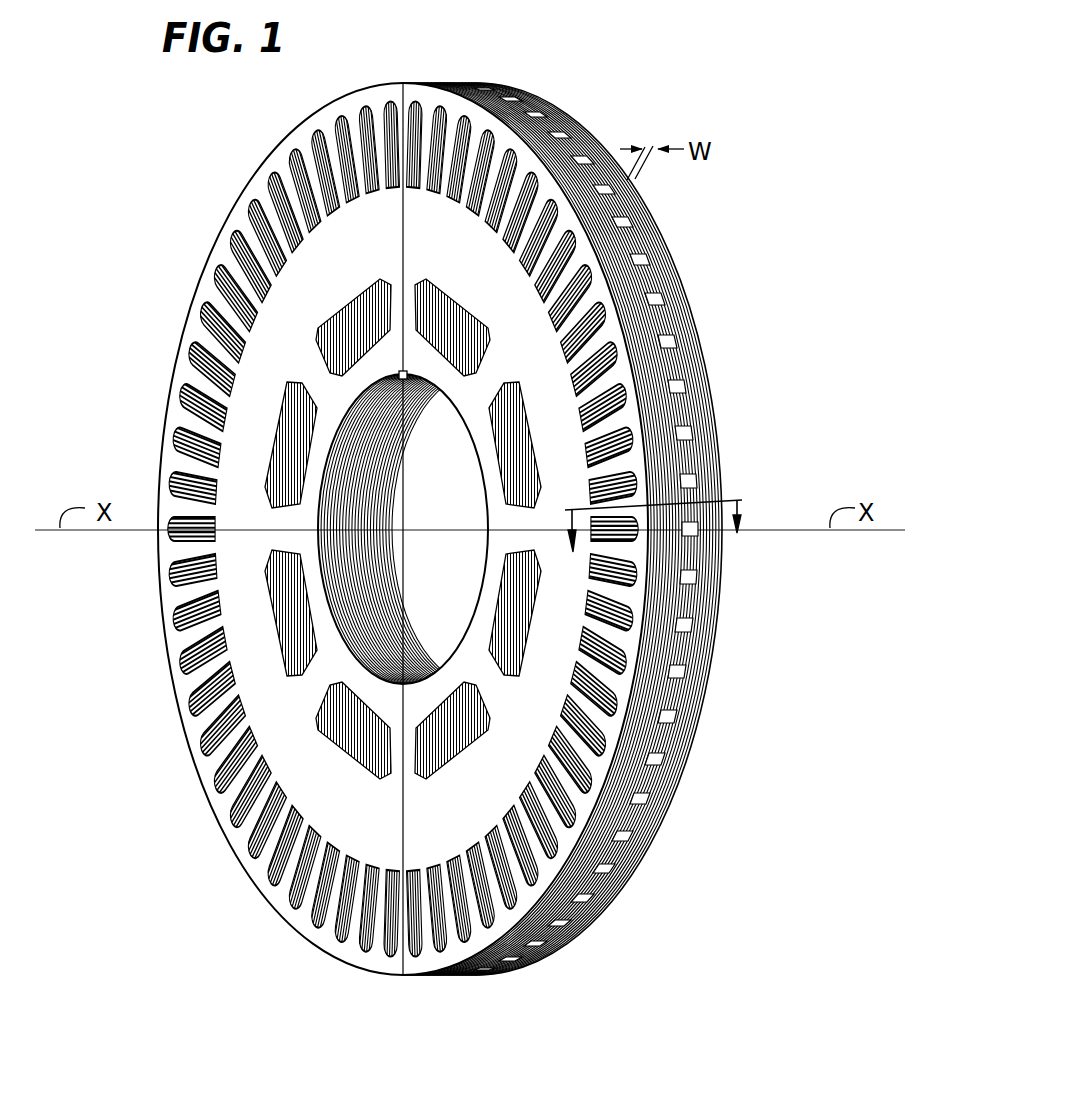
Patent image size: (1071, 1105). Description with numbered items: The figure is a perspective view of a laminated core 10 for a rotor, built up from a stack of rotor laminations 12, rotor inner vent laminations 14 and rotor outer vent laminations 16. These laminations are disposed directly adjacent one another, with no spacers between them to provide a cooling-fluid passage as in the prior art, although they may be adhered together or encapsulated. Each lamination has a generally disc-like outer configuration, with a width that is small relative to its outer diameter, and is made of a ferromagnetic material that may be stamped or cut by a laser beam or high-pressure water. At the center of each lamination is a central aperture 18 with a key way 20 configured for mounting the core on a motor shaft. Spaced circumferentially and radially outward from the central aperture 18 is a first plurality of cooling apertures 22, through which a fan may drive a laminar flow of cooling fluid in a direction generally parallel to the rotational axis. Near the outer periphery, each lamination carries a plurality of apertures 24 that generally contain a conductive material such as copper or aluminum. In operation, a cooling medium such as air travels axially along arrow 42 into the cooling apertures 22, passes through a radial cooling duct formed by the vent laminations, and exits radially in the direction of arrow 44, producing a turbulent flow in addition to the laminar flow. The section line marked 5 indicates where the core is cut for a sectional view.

The laminated core 10 is at (464, 501).
The rotor laminations 12 is at (616, 529).
The rotor inner vent laminations 14 is at (654, 375).
The rotor outer vent laminations 16 is at (650, 529).
The central aperture 18 is at (298, 527).
The key way 20 is at (426, 420).
The cooling apertures 22 is at (403, 529).
The apertures 24 is at (410, 160).
The arrow 42 is at (516, 613).
The arrow 44 is at (684, 582).
The section line 5- 5 is at (655, 512).